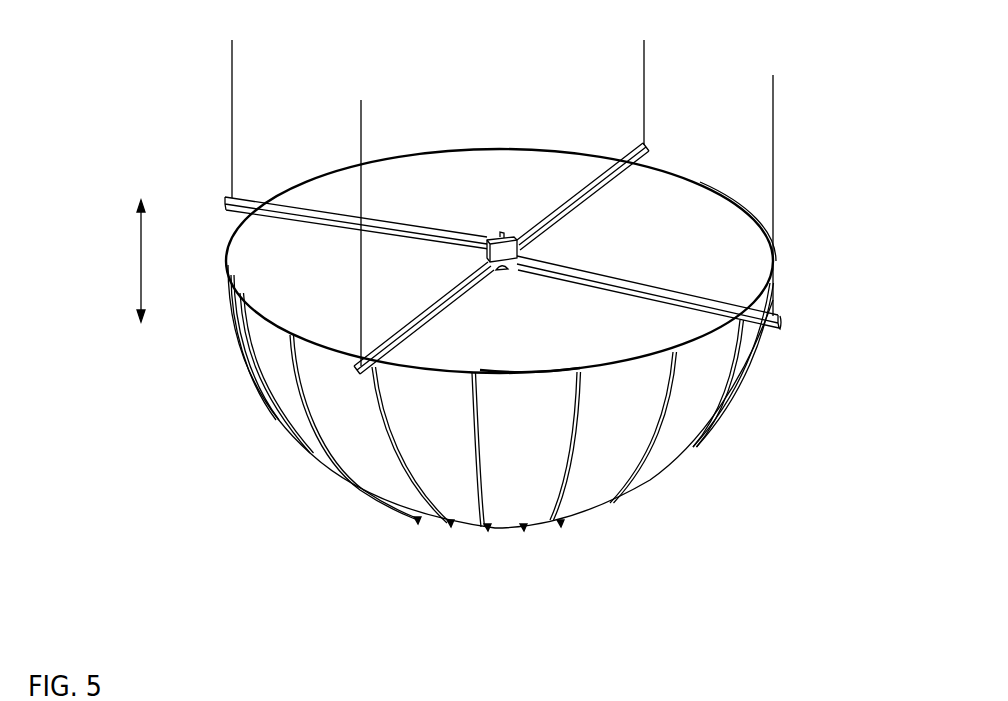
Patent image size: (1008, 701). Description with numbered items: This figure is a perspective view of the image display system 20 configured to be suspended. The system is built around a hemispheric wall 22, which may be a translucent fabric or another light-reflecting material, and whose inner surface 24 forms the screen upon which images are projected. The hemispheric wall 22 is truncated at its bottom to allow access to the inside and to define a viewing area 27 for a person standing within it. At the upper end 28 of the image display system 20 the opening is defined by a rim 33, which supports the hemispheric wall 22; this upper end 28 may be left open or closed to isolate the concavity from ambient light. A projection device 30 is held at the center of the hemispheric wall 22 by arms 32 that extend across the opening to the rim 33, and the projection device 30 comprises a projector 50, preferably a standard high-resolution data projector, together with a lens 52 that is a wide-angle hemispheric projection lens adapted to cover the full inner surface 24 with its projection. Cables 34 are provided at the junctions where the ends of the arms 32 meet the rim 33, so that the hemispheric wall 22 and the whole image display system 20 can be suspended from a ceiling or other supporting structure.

The image display system 20 is at (603, 528).
The hemispheric wall 22 is at (522, 475).
The inner surface 24 is at (472, 162).
The viewing area 27 is at (573, 350).
The upper end 28 is at (735, 215).
The projection device 30 is at (501, 235).
The arms 32 is at (568, 210).
The rim 33 is at (262, 318).
The cables 34 is at (361, 142).
The projector 50 is at (488, 240).
The lens 52 is at (502, 277).